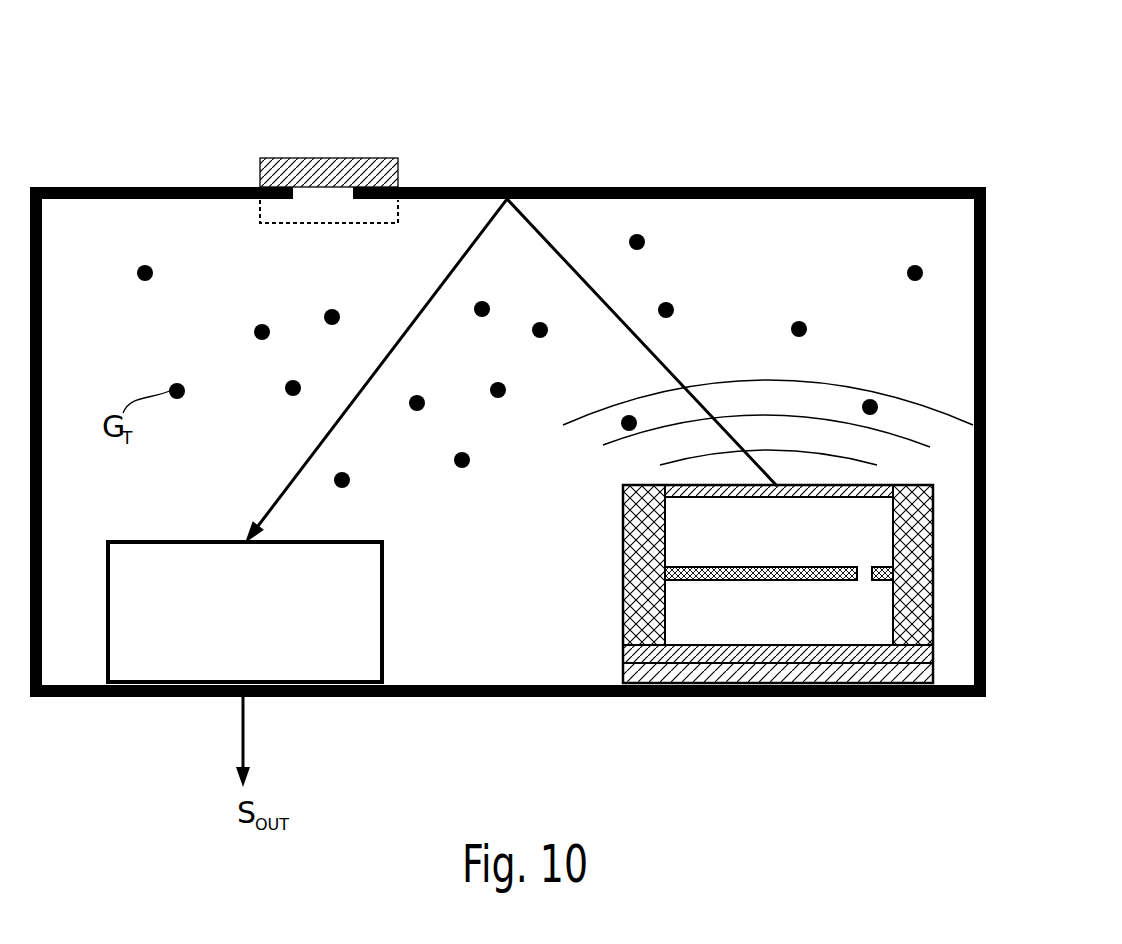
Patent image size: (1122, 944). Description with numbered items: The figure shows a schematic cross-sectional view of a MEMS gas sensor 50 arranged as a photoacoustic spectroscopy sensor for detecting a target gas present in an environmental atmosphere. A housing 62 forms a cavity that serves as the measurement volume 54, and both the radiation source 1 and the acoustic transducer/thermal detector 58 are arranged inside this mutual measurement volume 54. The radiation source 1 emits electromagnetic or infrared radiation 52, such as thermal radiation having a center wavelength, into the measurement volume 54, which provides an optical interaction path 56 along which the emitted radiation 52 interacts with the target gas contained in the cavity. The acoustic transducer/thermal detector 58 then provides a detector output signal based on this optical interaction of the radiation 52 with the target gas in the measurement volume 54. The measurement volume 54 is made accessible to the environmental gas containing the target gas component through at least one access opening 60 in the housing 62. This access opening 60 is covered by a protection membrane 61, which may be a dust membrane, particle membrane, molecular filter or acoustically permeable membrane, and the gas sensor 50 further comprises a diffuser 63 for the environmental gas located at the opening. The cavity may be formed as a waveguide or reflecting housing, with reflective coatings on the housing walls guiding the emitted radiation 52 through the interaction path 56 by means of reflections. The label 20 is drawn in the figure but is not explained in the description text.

The MEMS gas sensor 50 is at (982, 35).
The housing 62 is at (886, 194).
The protection membrane 61 is at (378, 176).
The access opening 60 is at (322, 194).
The diffuser 63 is at (398, 225).
The measurement volume 54 is at (530, 352).
The electromagnetic or infrared radiation 52 is at (804, 385).
The sound wave 20 is at (952, 410).
The radiation source 1 is at (949, 508).
The optical interaction path 56 is at (303, 465).
The acoustic transducer/thermal detector 58 is at (382, 610).